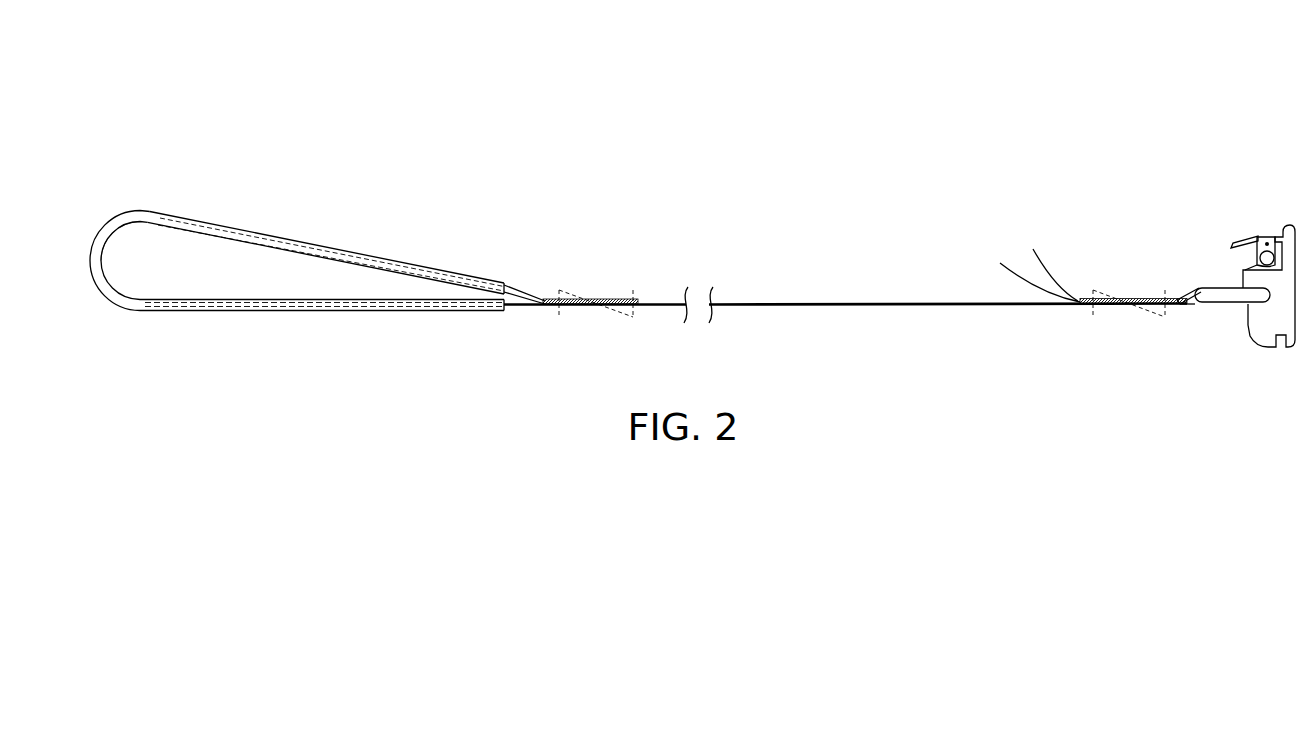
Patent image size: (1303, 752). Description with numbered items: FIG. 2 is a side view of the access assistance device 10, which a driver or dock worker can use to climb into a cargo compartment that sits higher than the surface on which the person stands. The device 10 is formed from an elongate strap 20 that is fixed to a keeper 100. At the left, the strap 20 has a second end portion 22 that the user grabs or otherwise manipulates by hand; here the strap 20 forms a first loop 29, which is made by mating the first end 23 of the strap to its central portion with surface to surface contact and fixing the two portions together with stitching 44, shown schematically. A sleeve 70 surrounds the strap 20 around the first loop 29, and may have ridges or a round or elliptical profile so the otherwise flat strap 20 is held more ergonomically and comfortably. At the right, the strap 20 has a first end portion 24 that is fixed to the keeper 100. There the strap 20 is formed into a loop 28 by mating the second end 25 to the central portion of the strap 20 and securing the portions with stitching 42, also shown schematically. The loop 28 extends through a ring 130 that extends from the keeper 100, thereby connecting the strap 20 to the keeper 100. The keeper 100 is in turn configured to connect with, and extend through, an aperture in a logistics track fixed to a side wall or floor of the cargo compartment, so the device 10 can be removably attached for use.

The access assistance device 10 is at (554, 118).
The elongate strap 20 is at (832, 301).
The second end portion 22 is at (100, 240).
The first loop 29 is at (183, 260).
The sleeve 70 is at (288, 238).
The first end 23 is at (600, 300).
The stitching 44 is at (590, 308).
The second end 25 is at (1110, 299).
The stitching 42 is at (1135, 307).
The first end portion 24 is at (1187, 290).
The loop 28 is at (1192, 303).
The ring 130 is at (1225, 299).
The keeper 100 is at (1268, 330).